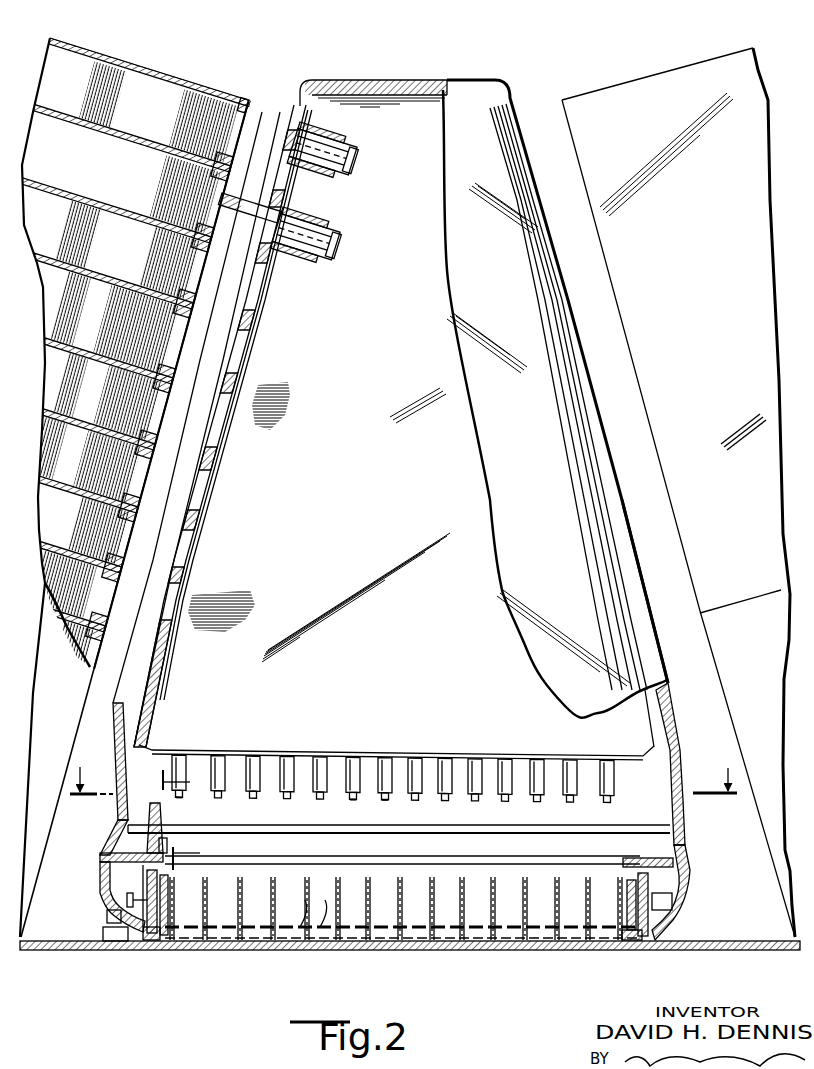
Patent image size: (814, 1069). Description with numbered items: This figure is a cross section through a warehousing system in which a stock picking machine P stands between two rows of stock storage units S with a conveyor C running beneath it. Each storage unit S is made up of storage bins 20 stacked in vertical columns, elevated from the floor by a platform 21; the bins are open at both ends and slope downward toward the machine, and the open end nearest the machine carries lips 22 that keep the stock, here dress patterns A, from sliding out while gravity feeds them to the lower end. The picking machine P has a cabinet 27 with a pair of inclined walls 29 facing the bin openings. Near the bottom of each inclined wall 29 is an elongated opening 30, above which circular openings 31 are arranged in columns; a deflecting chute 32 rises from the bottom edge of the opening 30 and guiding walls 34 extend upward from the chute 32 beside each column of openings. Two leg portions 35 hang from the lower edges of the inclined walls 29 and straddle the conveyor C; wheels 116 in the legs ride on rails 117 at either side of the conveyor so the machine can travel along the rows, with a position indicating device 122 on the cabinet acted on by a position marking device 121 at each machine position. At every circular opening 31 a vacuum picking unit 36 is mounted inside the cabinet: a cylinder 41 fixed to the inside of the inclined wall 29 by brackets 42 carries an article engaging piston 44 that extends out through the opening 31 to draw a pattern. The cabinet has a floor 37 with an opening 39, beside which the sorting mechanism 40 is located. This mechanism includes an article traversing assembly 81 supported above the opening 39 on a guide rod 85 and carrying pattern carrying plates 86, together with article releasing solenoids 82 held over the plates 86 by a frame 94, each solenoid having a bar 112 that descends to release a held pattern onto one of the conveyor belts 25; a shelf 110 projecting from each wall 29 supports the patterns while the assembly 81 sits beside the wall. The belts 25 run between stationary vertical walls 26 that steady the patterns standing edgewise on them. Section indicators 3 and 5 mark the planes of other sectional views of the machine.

The storage bins 20 is at (77, 68).
The platform 21 is at (68, 698).
The lips 22 is at (247, 104).
The conveyor belts 25 is at (430, 940).
The stationary vertical walls 26 is at (322, 928).
The cabinet 27 is at (370, 82).
The inclined walls 29 is at (303, 103).
The elongated opening 30 is at (133, 745).
The circular openings 31 is at (270, 206).
The deflecting chute 32 is at (118, 738).
The guiding walls 34 is at (182, 510).
The leg portions 35 is at (108, 890).
The vacuum picking unit 36 is at (372, 154).
The floor 37 is at (298, 860).
The opening 39 is at (345, 868).
The sorting mechanism 40 is at (150, 773).
The cylinder 41 is at (357, 165).
The brackets 42 is at (328, 128).
The article engaging piston 44 is at (243, 217).
The article traversing assembly 81 is at (164, 808).
The article releasing solenoids 82 is at (443, 778).
The guide rod 85 is at (515, 830).
The pattern carrying plates 86 is at (168, 845).
The frame 94 is at (298, 753).
The shelf 110 is at (120, 867).
The bar 112 is at (355, 799).
The wheels 116 is at (648, 887).
The rails 117 is at (155, 950).
The position marking device 121 is at (116, 942).
The position indicating device 122 is at (110, 924).
The section line 5 is at (191, 820).
The section line 3 is at (401, 802).
The stock storage units S is at (152, 68).
The dress patterns A is at (207, 110).
The stock picking machine P is at (462, 80).
The conveyor C is at (384, 950).